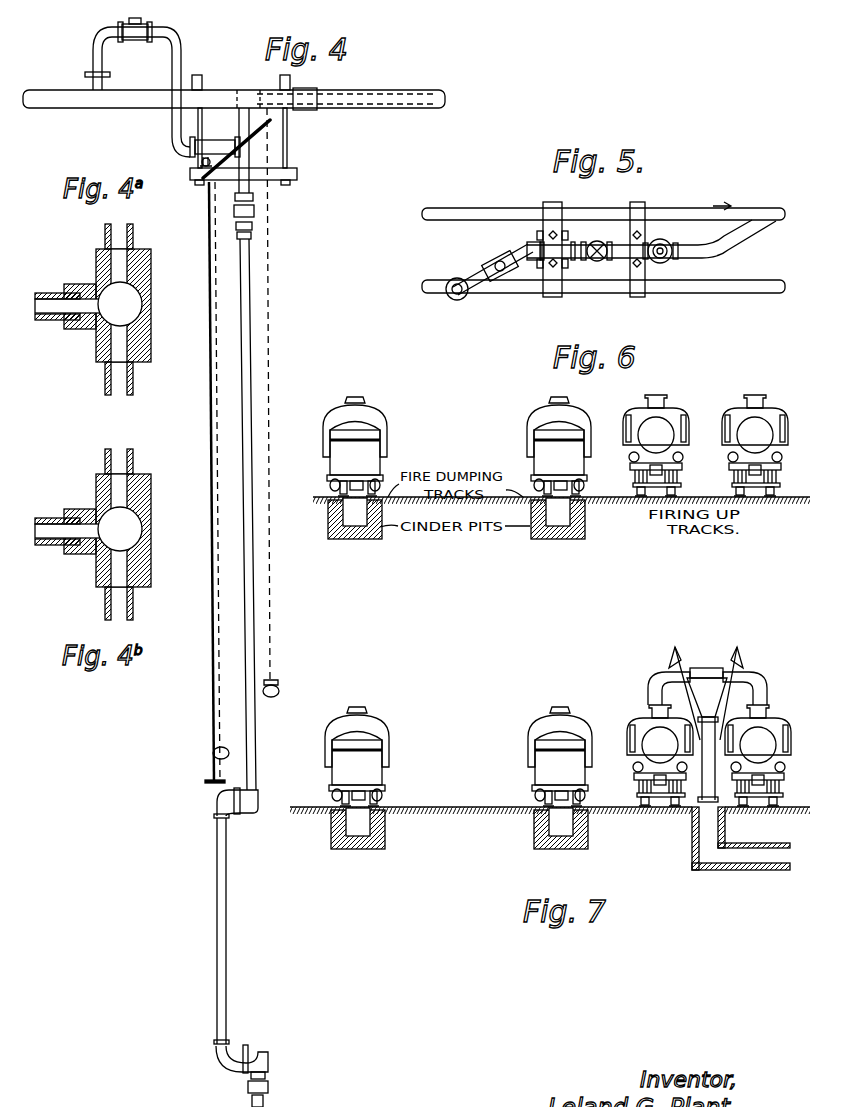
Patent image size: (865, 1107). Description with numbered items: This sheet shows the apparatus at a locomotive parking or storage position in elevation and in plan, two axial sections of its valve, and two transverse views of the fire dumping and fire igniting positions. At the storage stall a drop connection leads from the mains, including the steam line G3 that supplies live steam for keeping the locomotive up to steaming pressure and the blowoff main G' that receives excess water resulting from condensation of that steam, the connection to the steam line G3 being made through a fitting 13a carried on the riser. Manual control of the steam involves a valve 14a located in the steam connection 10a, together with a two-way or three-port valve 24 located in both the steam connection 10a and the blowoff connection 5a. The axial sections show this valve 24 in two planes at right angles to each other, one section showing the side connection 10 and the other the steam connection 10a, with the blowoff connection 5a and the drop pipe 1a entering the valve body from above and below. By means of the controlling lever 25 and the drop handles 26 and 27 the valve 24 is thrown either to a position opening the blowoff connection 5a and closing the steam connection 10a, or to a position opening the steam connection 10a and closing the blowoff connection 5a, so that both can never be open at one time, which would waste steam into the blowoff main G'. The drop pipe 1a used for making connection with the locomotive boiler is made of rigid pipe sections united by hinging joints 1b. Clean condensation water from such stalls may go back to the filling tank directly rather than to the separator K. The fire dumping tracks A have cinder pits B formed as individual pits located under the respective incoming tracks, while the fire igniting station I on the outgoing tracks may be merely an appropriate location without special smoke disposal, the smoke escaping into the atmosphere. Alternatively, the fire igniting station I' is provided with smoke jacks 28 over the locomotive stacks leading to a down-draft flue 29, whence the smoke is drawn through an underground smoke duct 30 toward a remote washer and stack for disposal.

In FIG. 4, the drop pipe 1a is at (258, 600).
In FIG. 4A, the drop pipe 1a is at (124, 395).
In FIG. 4B, the drop pipe 1a is at (133, 607).
In FIG. 4, the hinging joints 1b is at (240, 806).
In FIG. 4, the blowoff connection 5a is at (252, 114).
In FIG. 4A, the blowoff connection 5a is at (133, 228).
In FIG. 4B, the blowoff connection 5a is at (133, 457).
In FIG. 5, the blowoff connection 5a is at (598, 241).
In FIG. 4A, the pipe 10 is at (48, 293).
In FIG. 4, the steam connection 10a is at (104, 54).
In FIG. 4B, the steam connection 10a is at (52, 518).
In FIG. 5, the steam connection 10a is at (505, 263).
In FIG. 4, the valve 13a is at (152, 22).
In FIG. 5, the valve 13a is at (499, 284).
In FIG. 4, the valve 14a is at (216, 138).
In FIG. 5, the valve 14a is at (568, 260).
In FIG. 4, the two-way or three-port valve 24 is at (240, 152).
In FIG. 4A, the two-way or three-port valve 24 is at (142, 306).
In FIG. 4B, the two-way or three-port valve 24 is at (142, 540).
In FIG. 4, the controlling lever 25 is at (262, 130).
In FIG. 4, the drop handle 26 is at (273, 647).
In FIG. 4, the drop handle 27 is at (222, 690).
In FIG. 7, the smoke jacks 28 is at (663, 676).
In FIG. 7, the down-draft flue 29 is at (702, 792).
In FIG. 7, the underground smoke duct 30 is at (770, 864).
In FIG. 4, the separator K is at (207, 65).
In FIG. 5, the separator K is at (535, 196).
In FIG. 4, the steam line G3 is at (50, 110).
In FIG. 5, the steam line G3 is at (405, 293).
In FIG. 5, the blowoff main G' is at (572, 216).
In FIG. 6, the fire dumping track A is at (338, 497).
In FIG. 7, the fire dumping track A is at (373, 807).
In FIG. 6, the cinder pits B is at (364, 532).
In FIG. 7, the cinder pits B is at (363, 848).
In FIG. 6, the fire igniting station I is at (705, 446).
In FIG. 7, the fire igniting station I' is at (709, 771).